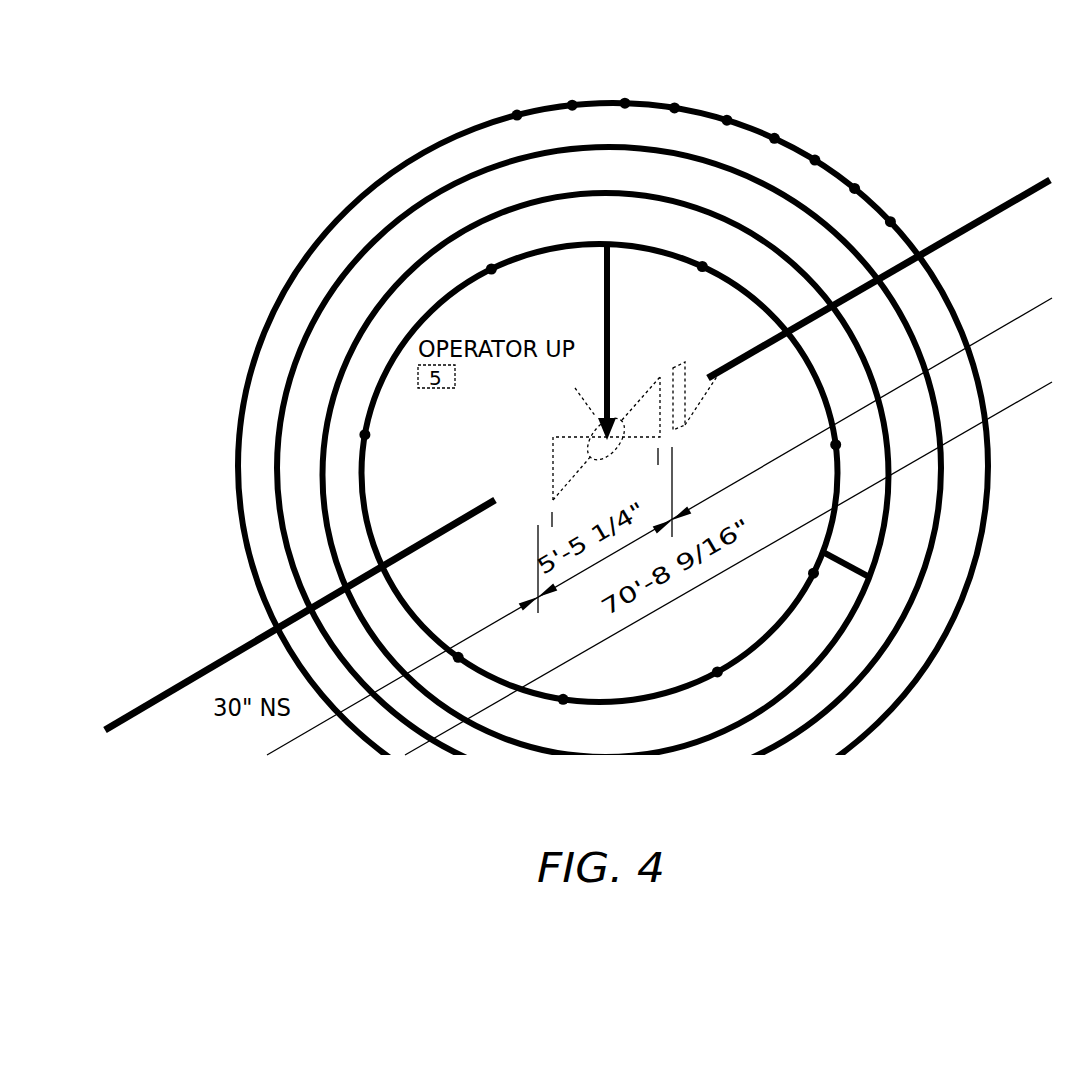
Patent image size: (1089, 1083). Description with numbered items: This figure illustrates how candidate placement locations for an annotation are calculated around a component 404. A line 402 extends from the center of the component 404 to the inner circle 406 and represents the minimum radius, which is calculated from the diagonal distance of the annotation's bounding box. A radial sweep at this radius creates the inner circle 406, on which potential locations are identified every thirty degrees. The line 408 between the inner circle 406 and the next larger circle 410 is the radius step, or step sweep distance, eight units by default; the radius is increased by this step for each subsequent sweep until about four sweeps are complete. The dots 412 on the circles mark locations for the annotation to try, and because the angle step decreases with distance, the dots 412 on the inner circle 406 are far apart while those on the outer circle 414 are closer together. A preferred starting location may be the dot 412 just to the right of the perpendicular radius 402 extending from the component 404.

The line 402 is at (612, 356).
The component 404 is at (614, 447).
The inner circle 406 is at (703, 400).
The line 408 is at (852, 567).
The next larger circle 410 is at (880, 551).
The dots 412 is at (818, 159).
The outer circle 414 is at (405, 164).